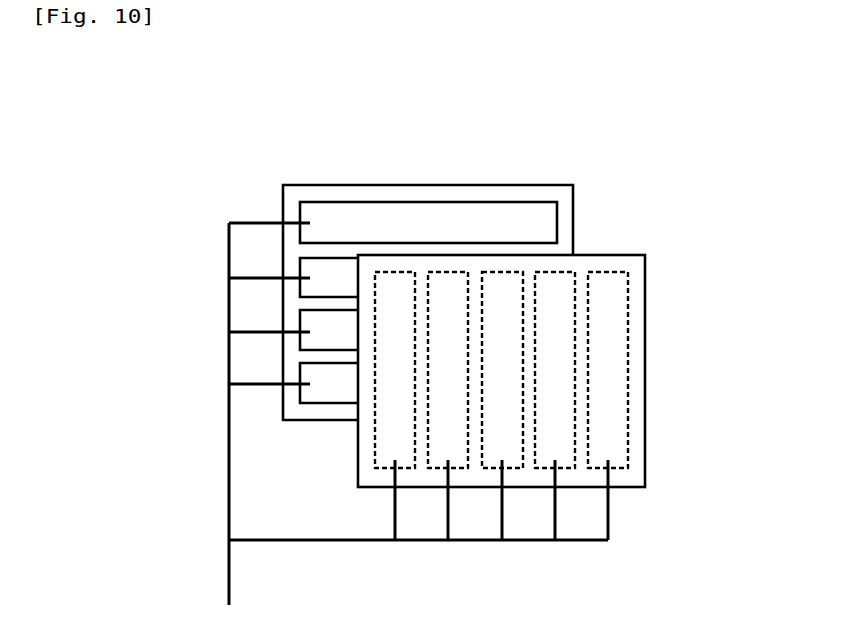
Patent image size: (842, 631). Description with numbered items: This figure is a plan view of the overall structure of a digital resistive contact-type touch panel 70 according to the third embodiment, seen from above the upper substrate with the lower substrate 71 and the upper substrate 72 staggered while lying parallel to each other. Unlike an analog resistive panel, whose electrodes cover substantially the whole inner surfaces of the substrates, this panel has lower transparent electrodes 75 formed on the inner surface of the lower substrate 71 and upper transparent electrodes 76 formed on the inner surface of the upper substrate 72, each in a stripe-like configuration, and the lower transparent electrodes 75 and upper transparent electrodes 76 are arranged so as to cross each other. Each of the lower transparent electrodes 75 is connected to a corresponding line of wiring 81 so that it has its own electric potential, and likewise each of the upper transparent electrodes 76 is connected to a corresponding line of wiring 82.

The touch panel 70 is at (501, 158).
The lower substrate 71 is at (562, 182).
The upper substrate 72 is at (645, 272).
The lower transparent electrodes 75 is at (374, 213).
The upper transparent electrodes 76 is at (617, 397).
The wiring 81 is at (256, 223).
The wiring 82 is at (397, 517).